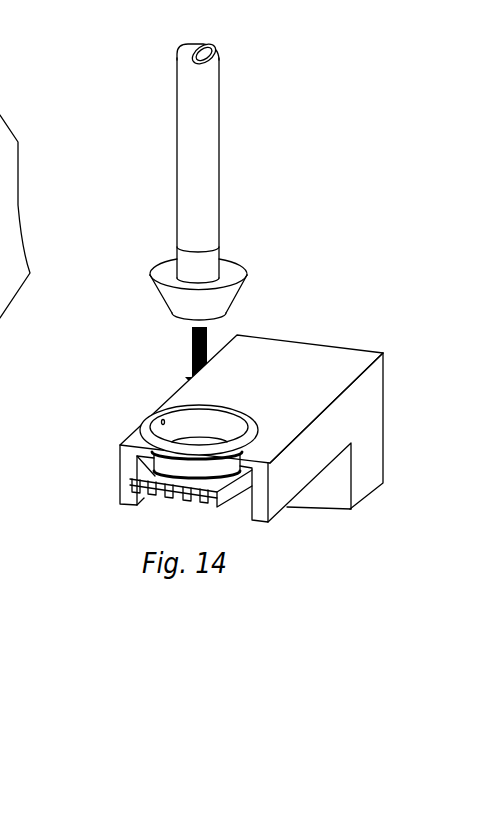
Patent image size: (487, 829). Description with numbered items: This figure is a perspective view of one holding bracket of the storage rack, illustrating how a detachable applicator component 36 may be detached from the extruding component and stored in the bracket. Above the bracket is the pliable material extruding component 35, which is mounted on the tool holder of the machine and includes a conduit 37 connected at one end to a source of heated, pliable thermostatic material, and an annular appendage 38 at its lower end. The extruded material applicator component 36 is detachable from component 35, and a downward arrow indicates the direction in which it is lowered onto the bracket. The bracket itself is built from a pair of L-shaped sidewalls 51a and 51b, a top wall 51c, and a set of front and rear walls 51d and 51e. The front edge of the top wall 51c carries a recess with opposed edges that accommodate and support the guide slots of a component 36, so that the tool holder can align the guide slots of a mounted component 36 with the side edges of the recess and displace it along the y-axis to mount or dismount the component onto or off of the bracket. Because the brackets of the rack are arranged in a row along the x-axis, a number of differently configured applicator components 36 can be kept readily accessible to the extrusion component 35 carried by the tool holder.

The pliable material extruding component 35 is at (232, 103).
The detachable pliable, extruded material applicator component 36 is at (148, 425).
The conduit 37 is at (208, 183).
The annular appendage 38 is at (233, 276).
The L-shaped sidewall 51a is at (121, 468).
The L-shaped sidewall 51b is at (376, 405).
The top wall 51c is at (324, 356).
The front wall 51d is at (345, 493).
The rear wall 51e is at (385, 461).